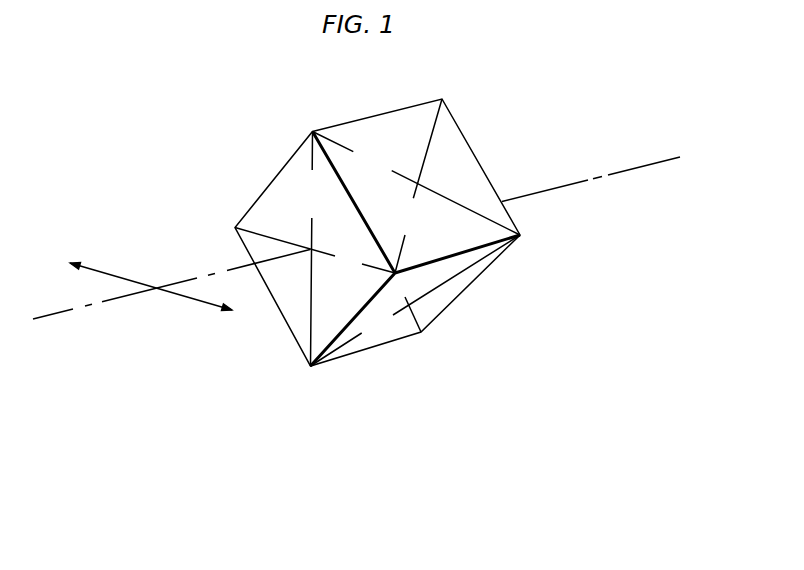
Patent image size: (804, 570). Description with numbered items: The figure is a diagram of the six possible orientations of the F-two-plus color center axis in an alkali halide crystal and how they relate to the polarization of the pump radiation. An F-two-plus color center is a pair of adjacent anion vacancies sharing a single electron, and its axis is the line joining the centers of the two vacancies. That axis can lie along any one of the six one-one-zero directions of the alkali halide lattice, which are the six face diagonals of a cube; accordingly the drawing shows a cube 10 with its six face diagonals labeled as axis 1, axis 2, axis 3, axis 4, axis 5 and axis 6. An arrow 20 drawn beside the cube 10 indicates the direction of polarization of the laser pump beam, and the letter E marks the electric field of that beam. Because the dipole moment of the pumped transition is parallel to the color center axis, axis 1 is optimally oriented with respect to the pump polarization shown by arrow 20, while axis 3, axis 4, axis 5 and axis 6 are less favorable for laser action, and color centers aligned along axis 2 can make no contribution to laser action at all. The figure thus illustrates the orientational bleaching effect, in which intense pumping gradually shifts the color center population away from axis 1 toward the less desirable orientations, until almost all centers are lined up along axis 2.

The axis 1 is at (315, 251).
The axis 2 is at (311, 249).
The axis 3 is at (417, 184).
The axis 4 is at (418, 186).
The axis 5 is at (416, 300).
The axis 6 is at (411, 302).
The cube 10 is at (452, 304).
The arrow 20 is at (183, 297).
The direction arrow E is at (139, 275).